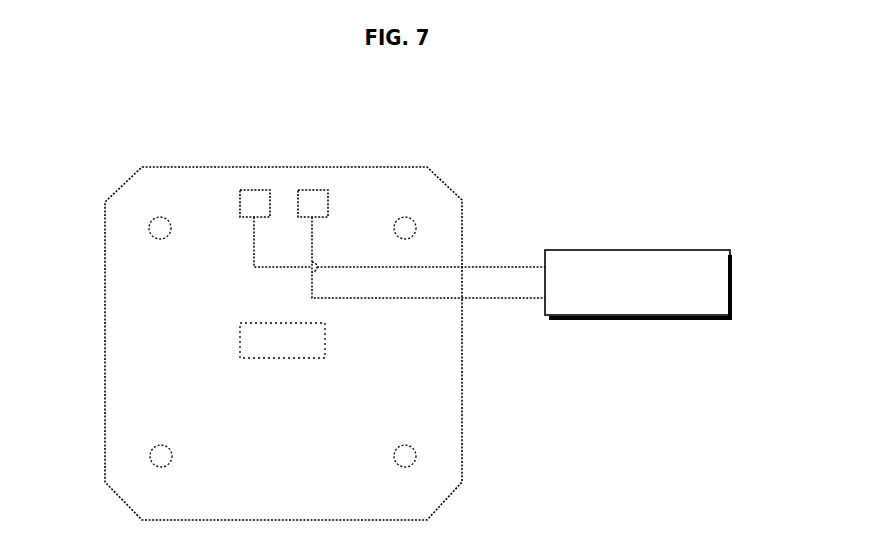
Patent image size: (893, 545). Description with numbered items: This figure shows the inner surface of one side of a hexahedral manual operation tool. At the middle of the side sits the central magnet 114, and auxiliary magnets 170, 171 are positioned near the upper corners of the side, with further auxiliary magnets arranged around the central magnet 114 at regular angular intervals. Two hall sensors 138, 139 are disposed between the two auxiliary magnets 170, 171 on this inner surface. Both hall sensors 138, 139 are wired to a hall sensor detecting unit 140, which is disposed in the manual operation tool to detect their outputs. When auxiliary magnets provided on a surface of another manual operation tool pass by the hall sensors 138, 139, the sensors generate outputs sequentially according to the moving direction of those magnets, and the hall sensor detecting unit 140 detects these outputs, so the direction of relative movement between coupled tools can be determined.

The central magnet 114 is at (240, 335).
The hall sensor 138 is at (256, 190).
The hall sensor 139 is at (313, 190).
The hall sensor detecting unit 140 is at (700, 250).
The auxiliary magnet 170 is at (150, 220).
The auxiliary magnet 171 is at (411, 218).